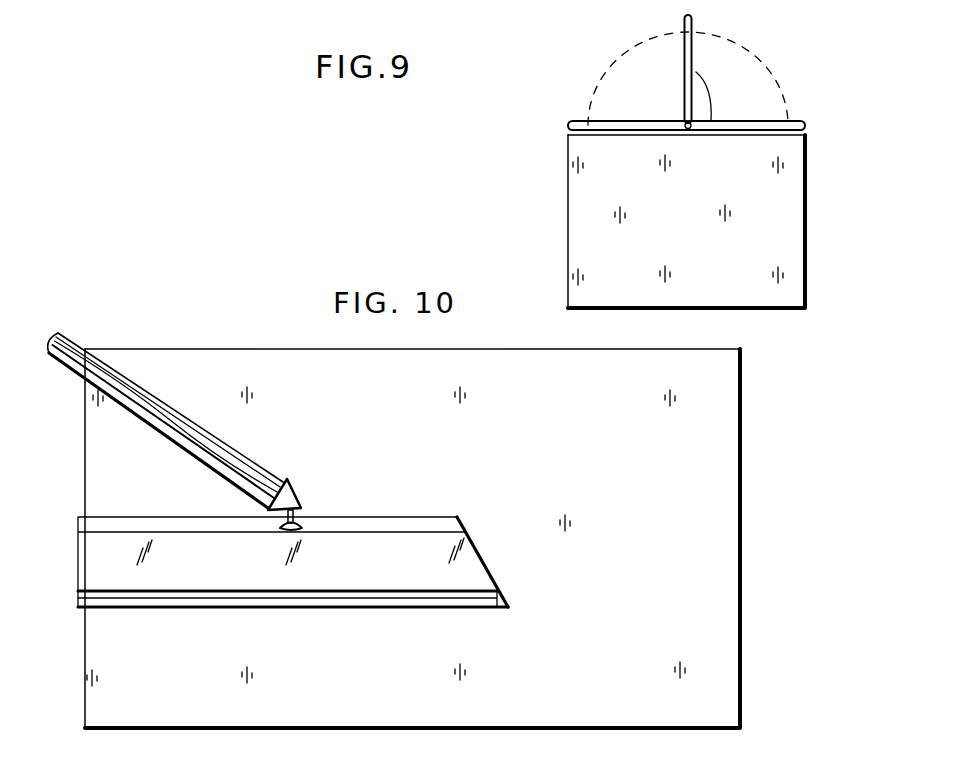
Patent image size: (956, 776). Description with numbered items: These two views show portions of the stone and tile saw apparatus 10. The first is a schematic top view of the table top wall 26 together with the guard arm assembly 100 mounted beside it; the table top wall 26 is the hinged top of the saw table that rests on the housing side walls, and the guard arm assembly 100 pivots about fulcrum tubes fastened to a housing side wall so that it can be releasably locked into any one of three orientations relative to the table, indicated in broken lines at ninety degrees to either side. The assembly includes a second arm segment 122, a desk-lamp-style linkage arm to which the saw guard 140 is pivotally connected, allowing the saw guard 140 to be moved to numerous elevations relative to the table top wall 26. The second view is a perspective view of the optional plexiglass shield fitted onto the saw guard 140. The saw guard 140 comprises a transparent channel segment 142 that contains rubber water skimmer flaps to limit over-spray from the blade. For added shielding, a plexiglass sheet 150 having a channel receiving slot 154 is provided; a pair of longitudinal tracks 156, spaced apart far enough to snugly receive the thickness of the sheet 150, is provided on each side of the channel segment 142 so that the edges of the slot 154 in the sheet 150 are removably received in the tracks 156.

In FIG. 9, the stone and tile saw apparatus 10 is at (568, 60).
In FIG. 9, the guard arm assembly 100 is at (604, 32).
In FIG. 9, the second arm segment 122 is at (686, 86).
In FIG. 9, the table top wall 26 is at (578, 218).
In FIG. 10, the saw guard 140 is at (84, 307).
In FIG. 10, the plexiglass sheet 150 is at (272, 360).
In FIG. 10, the transparent channel segment 142 is at (430, 547).
In FIG. 10, the channel receiving slot 154 is at (498, 601).
In FIG. 10, the longitudinal tracks 156 is at (333, 598).